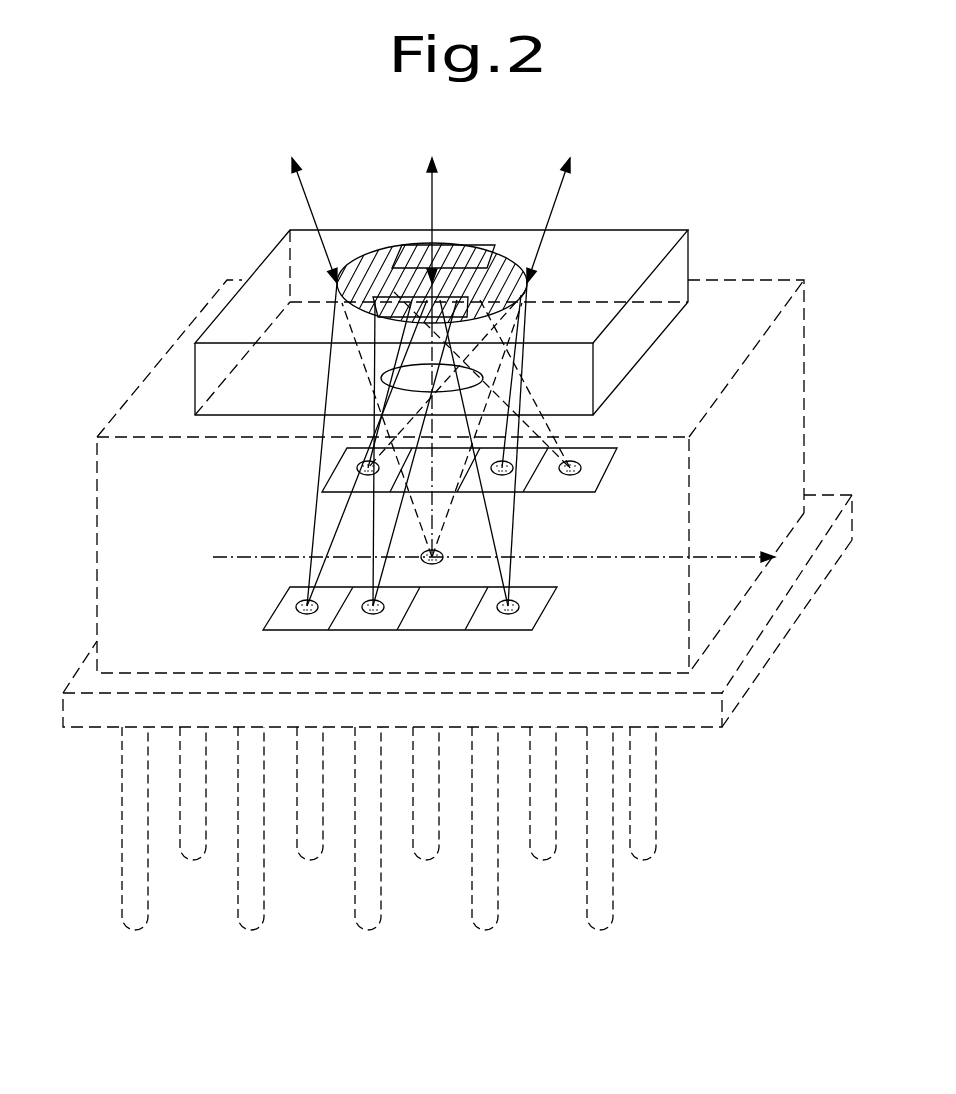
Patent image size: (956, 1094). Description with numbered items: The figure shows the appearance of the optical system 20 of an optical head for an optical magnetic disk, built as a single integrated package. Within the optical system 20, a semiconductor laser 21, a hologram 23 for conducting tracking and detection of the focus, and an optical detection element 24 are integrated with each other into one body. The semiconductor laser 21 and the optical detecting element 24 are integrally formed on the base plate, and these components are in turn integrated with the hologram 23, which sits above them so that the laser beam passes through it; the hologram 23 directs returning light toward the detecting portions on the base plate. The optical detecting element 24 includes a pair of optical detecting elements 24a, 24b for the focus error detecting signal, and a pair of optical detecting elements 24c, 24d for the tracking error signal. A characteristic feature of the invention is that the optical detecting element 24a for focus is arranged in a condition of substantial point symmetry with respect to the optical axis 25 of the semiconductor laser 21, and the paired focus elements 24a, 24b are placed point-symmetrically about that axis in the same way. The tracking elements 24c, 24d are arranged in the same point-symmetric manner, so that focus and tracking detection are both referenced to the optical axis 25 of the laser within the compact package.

The optical system 20 is at (628, 215).
The semiconductor laser 21 is at (437, 553).
The hologram 23 is at (688, 258).
The optical detection element 24 is at (598, 478).
The optical detecting element for focus 24a is at (383, 614).
The optical detecting element of the focus error detecting signal 24b is at (527, 433).
The optical detecting element of the tracking error signal 24c is at (296, 608).
The optical detecting element of the tracking error signal 24d is at (360, 470).
The optical axis 25 is at (433, 500).